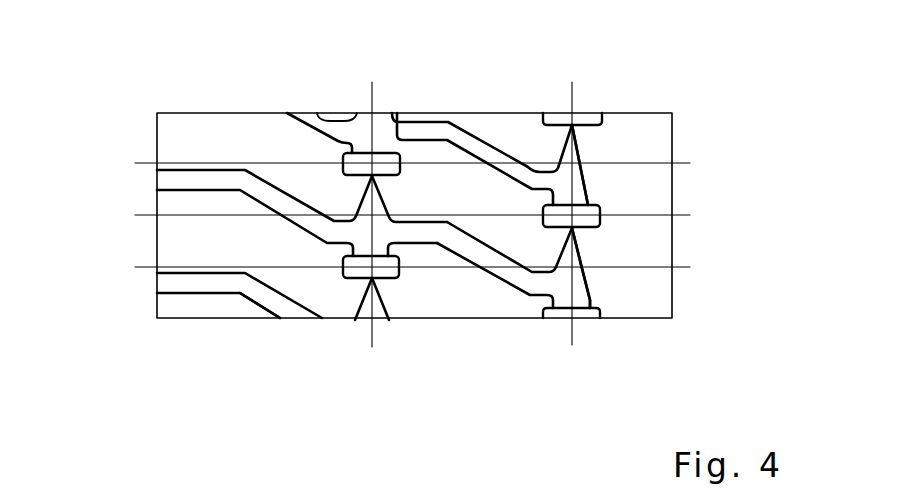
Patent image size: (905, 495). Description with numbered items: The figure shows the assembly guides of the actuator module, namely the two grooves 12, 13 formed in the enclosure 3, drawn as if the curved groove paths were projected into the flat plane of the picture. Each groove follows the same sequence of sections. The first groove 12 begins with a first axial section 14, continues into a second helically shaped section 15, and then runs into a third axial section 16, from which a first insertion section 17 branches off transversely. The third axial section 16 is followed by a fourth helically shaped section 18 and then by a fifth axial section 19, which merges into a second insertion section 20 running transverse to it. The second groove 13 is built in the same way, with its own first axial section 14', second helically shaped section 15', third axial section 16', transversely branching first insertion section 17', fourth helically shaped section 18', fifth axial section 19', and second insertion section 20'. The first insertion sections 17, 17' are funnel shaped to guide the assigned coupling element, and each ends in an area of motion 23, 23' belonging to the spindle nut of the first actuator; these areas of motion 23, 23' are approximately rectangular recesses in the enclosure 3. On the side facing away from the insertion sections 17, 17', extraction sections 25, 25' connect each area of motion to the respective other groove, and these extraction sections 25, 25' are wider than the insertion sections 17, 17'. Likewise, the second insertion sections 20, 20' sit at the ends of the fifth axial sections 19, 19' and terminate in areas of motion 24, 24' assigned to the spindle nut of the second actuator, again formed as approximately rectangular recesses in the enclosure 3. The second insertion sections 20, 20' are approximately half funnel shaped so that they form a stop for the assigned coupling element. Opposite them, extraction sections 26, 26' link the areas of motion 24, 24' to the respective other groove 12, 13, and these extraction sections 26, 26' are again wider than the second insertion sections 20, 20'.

The enclosure 3 is at (177, 133).
The first axial section 14 is at (212, 182).
The second helically shaped section 15 is at (295, 119).
The groove 12 is at (178, 192).
The first axial section 14' is at (175, 304).
The groove 13 is at (173, 298).
The second helically shaped section 15' is at (201, 354).
The extraction section 25 is at (298, 330).
The first insertion section 17' is at (331, 347).
The area of motion 23 is at (392, 329).
The third axial section 16 is at (493, 325).
The fourth helically shaped section 18 is at (509, 319).
The fifth axial section 19 is at (583, 322).
The area of motion 24 is at (612, 362).
The first insertion section 17 is at (284, 107).
The extraction section 25' is at (324, 83).
The area of motion 23' is at (377, 95).
The third axial section 16' is at (482, 94).
The fourth helically shaped section 18' is at (475, 110).
The fifth axial section 19' is at (584, 110).
The second insertion section 20' is at (667, 123).
The extraction section 26' is at (682, 165).
The area of motion 24' is at (667, 218).
The second insertion section 20 is at (678, 259).
The extraction section 26 is at (681, 303).